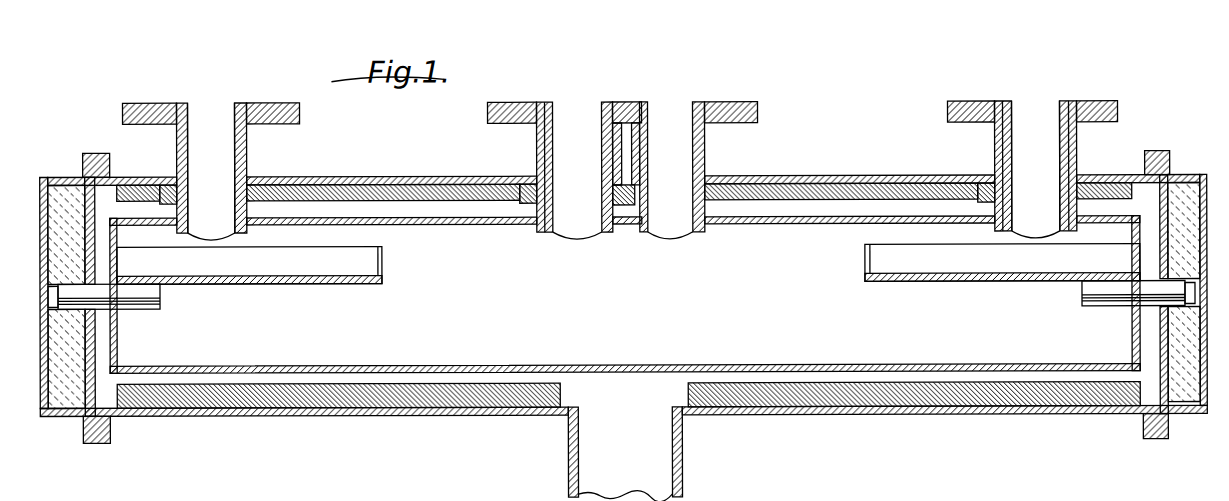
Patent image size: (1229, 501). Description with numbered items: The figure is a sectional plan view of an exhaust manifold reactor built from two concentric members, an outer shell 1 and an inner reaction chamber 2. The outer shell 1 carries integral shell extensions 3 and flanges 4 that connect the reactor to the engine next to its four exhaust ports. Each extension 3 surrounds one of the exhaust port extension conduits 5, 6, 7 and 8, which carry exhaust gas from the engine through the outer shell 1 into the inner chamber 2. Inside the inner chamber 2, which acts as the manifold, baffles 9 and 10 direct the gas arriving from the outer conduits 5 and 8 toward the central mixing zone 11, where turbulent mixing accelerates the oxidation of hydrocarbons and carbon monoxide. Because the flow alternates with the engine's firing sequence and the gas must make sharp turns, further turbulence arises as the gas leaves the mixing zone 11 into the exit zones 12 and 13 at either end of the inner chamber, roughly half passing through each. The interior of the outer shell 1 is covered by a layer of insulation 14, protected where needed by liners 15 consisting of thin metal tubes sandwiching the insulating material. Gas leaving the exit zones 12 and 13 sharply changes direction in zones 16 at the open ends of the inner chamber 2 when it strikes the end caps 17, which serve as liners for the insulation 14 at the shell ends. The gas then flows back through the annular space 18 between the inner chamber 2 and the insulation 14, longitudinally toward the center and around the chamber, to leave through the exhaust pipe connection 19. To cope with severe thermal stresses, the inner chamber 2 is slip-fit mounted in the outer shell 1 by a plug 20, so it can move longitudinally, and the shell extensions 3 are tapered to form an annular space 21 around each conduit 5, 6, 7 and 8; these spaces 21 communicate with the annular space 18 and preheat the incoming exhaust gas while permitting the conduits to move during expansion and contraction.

The outer shell 1 is at (405, 178).
The inner reaction chamber 2 is at (496, 226).
The shell extension 3 is at (248, 145).
The flange 4 is at (258, 104).
The exhaust port extension conduit 5 is at (185, 154).
The exhaust port extension conduit 6 is at (548, 188).
The exhaust port extension conduit 7 is at (647, 185).
The exhaust port extension conduit 8 is at (1013, 209).
The baffle 9 is at (300, 276).
The baffle 10 is at (968, 275).
The mixing zone 11 is at (648, 314).
The exit zone 12 is at (345, 326).
The exit zone 13 is at (965, 336).
The layer of insulation 14 is at (63, 188).
The liner 15 is at (325, 193).
The zone 16 is at (105, 326).
The end cap 17 is at (95, 349).
The annular space 18 is at (414, 376).
The exhaust pipe connection 19 is at (684, 457).
The plug 20 is at (162, 299).
The annular space 21 is at (157, 183).